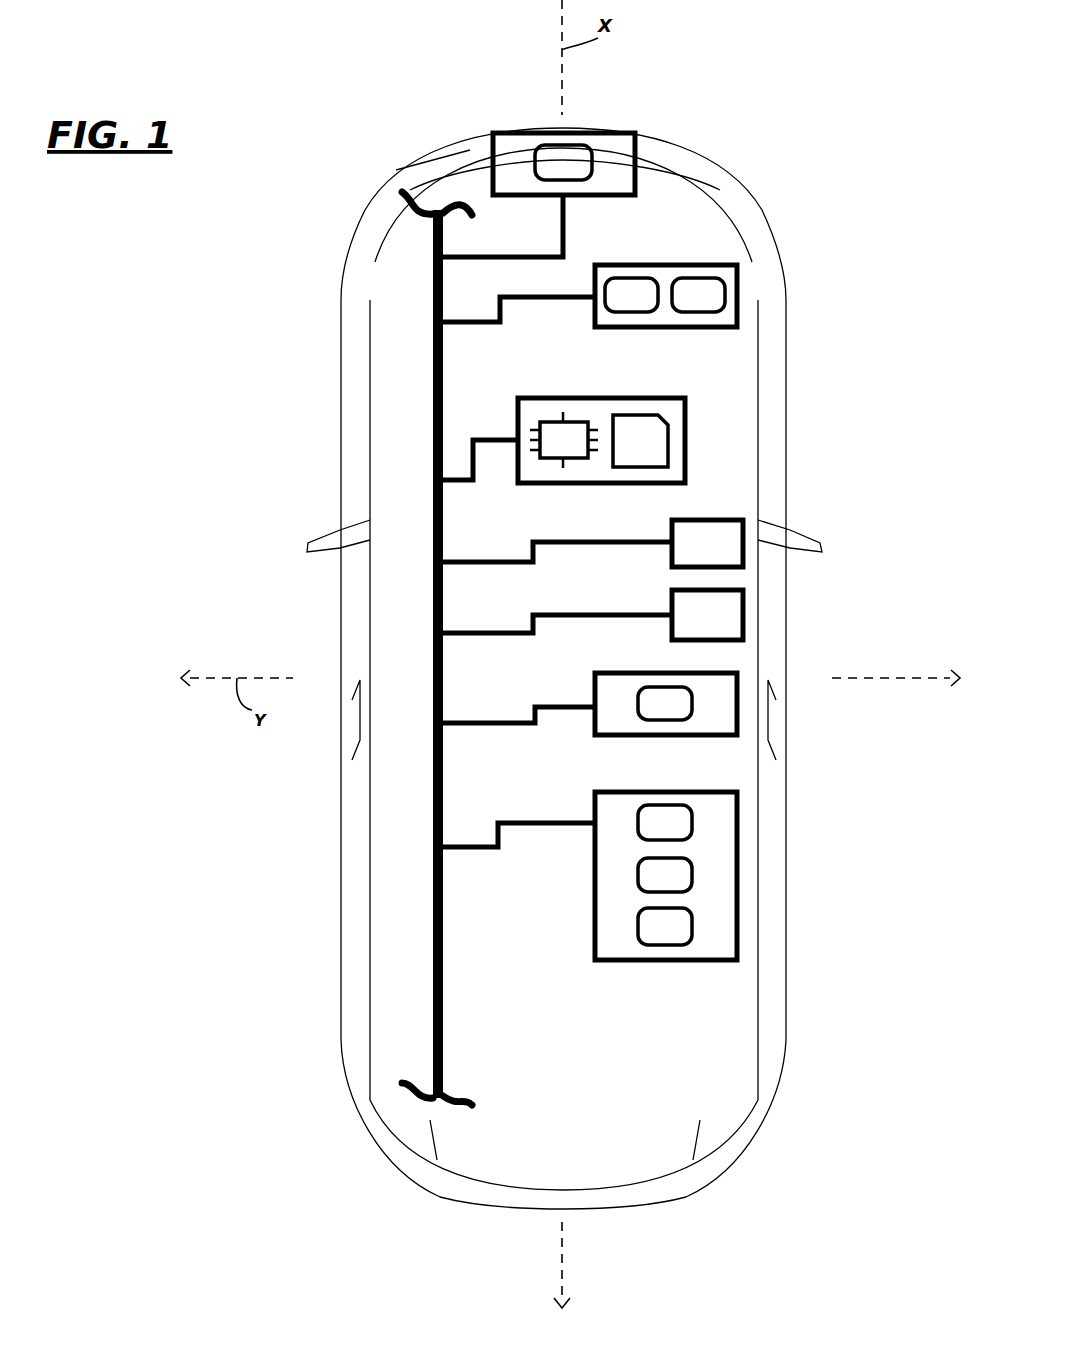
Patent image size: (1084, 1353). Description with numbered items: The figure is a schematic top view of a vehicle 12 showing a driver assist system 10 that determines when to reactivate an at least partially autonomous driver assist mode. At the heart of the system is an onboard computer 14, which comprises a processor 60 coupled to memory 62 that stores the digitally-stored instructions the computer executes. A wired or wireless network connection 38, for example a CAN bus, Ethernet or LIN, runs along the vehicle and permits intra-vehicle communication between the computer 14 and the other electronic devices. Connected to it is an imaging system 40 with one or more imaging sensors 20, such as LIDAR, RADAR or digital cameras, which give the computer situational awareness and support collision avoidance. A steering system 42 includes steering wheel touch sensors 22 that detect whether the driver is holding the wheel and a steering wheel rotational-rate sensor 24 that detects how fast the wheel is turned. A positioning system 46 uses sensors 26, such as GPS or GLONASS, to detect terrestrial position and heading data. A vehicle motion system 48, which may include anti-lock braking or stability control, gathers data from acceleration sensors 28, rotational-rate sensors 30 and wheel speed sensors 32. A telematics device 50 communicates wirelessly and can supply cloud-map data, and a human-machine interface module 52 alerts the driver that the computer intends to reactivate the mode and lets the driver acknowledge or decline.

The driver assist system 10 is at (392, 350).
The vehicle 12 is at (373, 98).
The onboard computer 14 is at (590, 395).
The imaging sensor 20 is at (563, 162).
The steering wheel touch sensor 22 is at (631, 295).
The steering wheel rotational-rate sensor 24 is at (698, 295).
The positioning sensor 26 is at (665, 703).
The acceleration sensor 28 is at (665, 822).
The rotational-rate sensor 30 is at (665, 875).
The wheel speed sensor 32 is at (665, 926).
The network connection 38 is at (430, 692).
The imaging system 40 is at (530, 130).
The steering system 42 is at (673, 262).
The positioning system 46 is at (618, 671).
The vehicle motion system 48 is at (618, 790).
The telematics device 50 is at (707, 543).
The human-machine interface module 52 is at (707, 615).
The processor 60 is at (564, 440).
The memory 62 is at (640, 441).